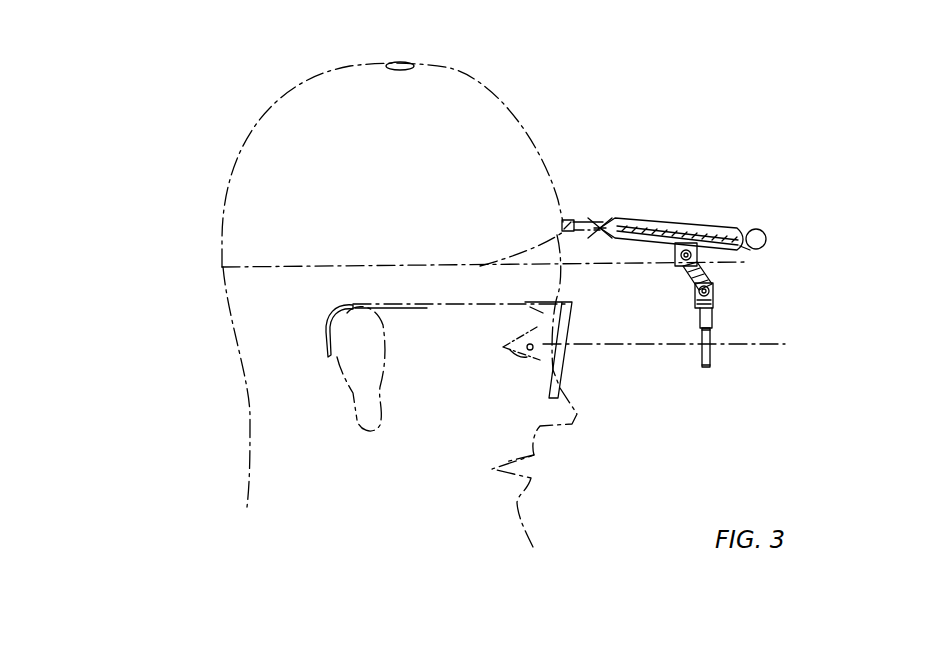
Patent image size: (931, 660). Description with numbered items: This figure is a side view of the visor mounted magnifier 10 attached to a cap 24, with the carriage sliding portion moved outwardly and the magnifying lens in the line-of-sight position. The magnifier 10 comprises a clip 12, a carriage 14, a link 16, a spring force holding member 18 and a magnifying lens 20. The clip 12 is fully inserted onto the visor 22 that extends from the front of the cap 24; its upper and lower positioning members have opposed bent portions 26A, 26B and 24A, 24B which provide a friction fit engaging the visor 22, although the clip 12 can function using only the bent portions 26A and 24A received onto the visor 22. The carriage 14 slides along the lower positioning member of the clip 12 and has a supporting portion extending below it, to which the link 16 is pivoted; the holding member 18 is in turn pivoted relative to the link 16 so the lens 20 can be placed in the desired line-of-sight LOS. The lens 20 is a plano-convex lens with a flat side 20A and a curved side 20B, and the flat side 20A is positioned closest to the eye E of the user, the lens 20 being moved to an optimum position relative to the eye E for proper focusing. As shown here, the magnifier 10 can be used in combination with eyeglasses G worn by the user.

The visor mounted magnifier 10 is at (728, 184).
The clip 12 is at (657, 218).
The carriage 14 is at (677, 269).
The link 16 is at (707, 274).
The spring force holding member 18 is at (713, 310).
The magnifying lens 20 is at (702, 368).
The flat side 20A is at (700, 347).
The curved side 20B is at (712, 355).
The visor 22 is at (576, 218).
The cap 24 is at (477, 115).
The bent portion 24A is at (605, 248).
The bent portion 24B is at (737, 249).
The bent portion 26A is at (603, 220).
The bent portion 26B is at (742, 230).
The eyeglasses G is at (427, 312).
The eye E is at (513, 348).
The line-of-sight LOS is at (776, 347).